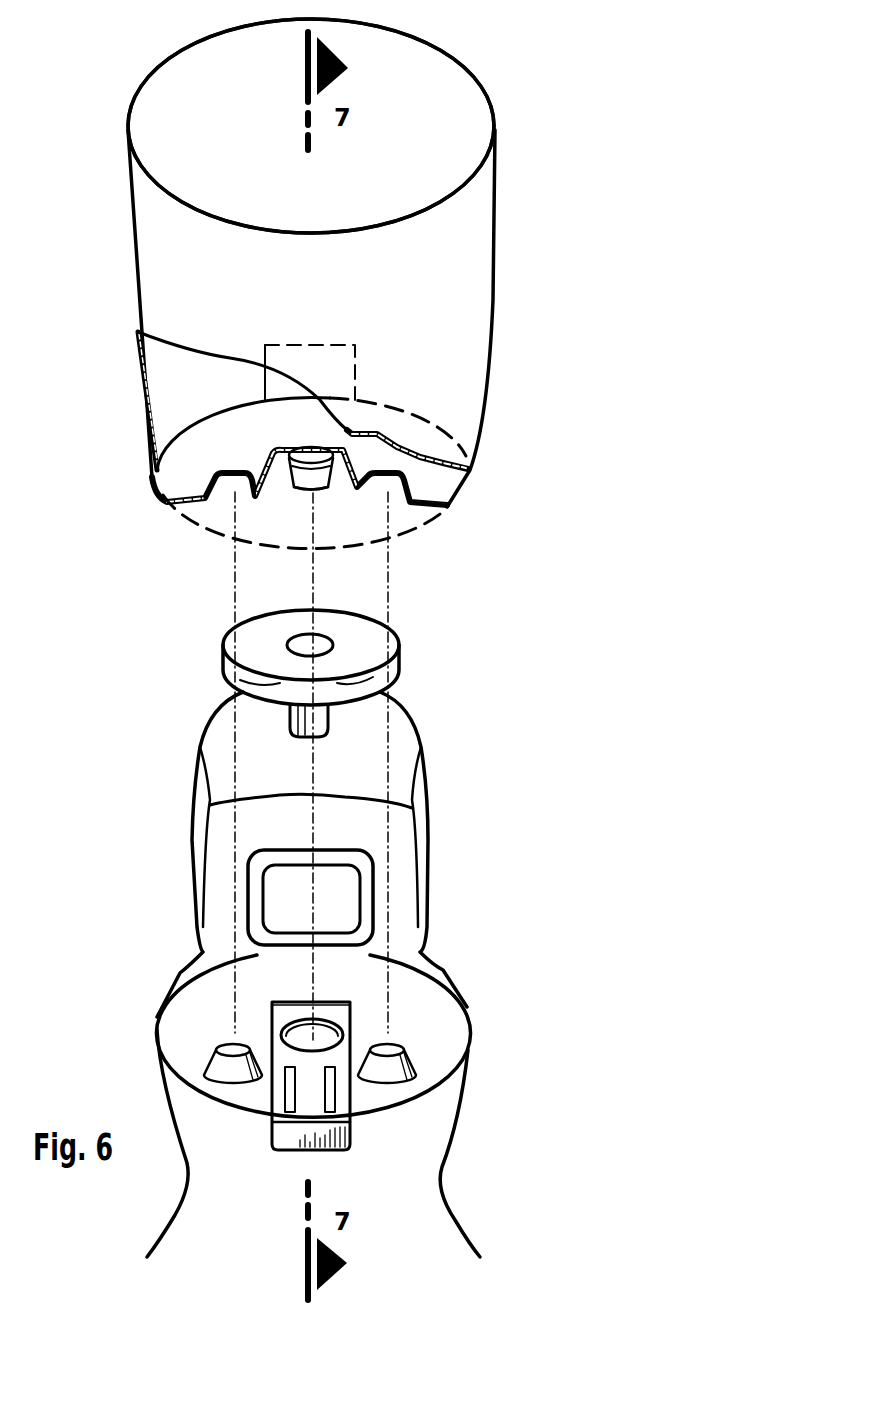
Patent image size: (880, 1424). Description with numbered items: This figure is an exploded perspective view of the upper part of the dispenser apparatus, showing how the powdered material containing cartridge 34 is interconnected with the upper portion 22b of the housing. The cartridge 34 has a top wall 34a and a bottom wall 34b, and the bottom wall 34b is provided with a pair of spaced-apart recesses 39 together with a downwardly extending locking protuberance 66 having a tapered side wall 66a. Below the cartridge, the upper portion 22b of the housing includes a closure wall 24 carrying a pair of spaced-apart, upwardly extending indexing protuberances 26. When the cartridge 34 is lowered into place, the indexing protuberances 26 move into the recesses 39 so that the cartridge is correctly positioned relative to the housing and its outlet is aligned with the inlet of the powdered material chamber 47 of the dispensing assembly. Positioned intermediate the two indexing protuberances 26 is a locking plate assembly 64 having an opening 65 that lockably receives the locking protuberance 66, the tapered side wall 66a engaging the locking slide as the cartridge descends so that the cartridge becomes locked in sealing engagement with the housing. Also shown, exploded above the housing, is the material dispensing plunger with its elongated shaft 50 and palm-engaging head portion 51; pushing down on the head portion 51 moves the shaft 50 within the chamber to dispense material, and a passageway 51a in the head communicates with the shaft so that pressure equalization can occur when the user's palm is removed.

The cartridge 34 is at (490, 300).
The top wall 34a is at (448, 87).
The bottom wall 34b is at (430, 500).
The recesses 39 is at (213, 493).
The locking protuberance 66 is at (327, 449).
The tapered side wall 66a is at (300, 480).
The head portion 51 is at (399, 655).
The passageway 51a is at (317, 643).
The shaft 50 is at (328, 717).
The closure wall 24 is at (437, 1000).
The upper portion 22b is at (465, 1097).
The powdered material chamber 47 is at (338, 898).
The locking plate assembly 64 is at (272, 1030).
The opening 65 is at (322, 1037).
The indexing protuberances 26 is at (215, 1053).